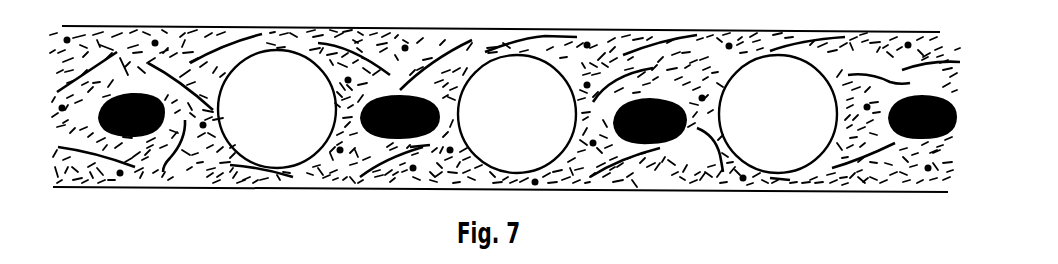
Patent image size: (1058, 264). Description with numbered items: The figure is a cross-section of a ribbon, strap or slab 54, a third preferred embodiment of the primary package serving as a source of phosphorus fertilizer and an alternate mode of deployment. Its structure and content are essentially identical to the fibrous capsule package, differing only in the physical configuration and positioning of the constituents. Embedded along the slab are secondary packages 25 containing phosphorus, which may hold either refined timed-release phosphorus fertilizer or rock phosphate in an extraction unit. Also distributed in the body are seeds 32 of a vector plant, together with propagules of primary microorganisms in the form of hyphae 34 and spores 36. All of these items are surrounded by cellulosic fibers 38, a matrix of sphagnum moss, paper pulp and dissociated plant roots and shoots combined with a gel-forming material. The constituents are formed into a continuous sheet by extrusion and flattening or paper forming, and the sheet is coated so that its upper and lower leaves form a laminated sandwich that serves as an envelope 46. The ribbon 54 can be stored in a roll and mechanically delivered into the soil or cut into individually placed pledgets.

The secondary package 25 is at (302, 168).
The seed 32 is at (667, 141).
The hyphae 34 is at (593, 176).
The spores 36 is at (412, 170).
The cellulosic fibers 38 is at (147, 168).
The envelope 46 is at (356, 29).
The ribbon, strap or slab 54 is at (703, 28).